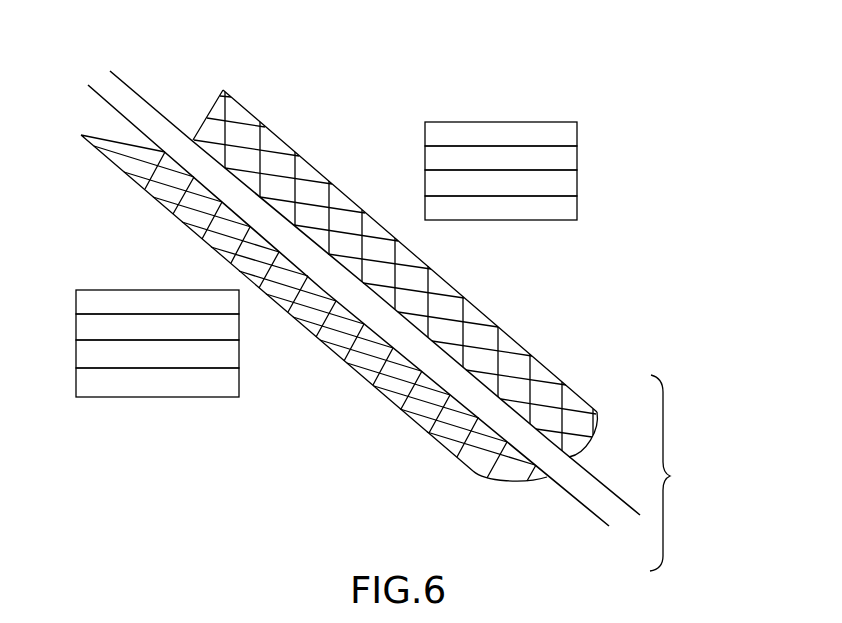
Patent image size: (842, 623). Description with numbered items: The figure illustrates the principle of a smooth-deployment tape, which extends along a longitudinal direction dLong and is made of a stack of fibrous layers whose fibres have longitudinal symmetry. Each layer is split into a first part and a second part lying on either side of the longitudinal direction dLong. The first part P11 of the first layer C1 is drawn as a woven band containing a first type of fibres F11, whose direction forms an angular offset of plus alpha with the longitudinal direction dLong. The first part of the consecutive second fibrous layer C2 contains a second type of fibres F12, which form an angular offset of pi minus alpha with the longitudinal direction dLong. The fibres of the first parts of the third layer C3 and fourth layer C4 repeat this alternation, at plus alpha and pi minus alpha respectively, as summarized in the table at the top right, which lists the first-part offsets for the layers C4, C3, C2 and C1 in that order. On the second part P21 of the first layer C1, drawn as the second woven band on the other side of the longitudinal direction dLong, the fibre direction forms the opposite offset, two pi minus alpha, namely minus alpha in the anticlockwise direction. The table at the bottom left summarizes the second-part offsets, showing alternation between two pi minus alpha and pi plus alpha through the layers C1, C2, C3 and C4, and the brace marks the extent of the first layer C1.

The longitudinal direction dLong is at (364, 283).
The first type of fibres F11 is at (293, 152).
The second type of fibres F12 is at (348, 200).
The first part of the first layer P11 is at (603, 419).
The second part of the first layer P21 is at (314, 329).
The first layer C1 is at (374, 382).
The second fibrous layer C2 is at (324, 268).
The third layer C3 is at (324, 242).
The fourth layer C4 is at (324, 218).